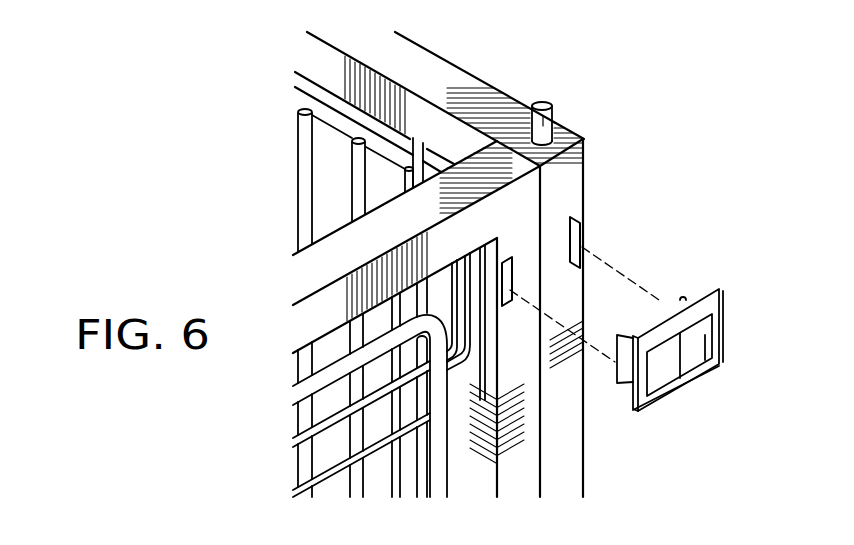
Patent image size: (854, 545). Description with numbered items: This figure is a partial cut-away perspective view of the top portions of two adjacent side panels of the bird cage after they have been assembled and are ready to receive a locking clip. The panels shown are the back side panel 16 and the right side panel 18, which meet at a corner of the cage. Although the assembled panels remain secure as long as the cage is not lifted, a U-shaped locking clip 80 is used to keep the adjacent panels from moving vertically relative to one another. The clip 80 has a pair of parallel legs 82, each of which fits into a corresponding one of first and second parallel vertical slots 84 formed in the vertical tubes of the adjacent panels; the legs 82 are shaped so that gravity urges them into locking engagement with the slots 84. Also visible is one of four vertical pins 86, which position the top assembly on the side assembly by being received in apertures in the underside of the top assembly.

The back side panel 16 is at (574, 170).
The right side panel 18 is at (333, 256).
The U-shaped locking clip 80 is at (715, 352).
The legs 82 is at (700, 338).
The vertical slots 84 is at (512, 262).
The vertical pin 86 is at (542, 101).